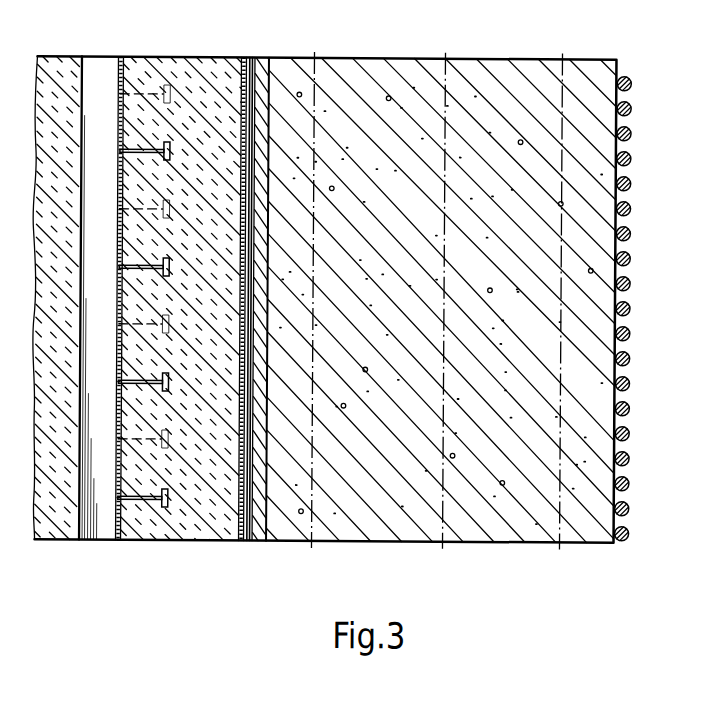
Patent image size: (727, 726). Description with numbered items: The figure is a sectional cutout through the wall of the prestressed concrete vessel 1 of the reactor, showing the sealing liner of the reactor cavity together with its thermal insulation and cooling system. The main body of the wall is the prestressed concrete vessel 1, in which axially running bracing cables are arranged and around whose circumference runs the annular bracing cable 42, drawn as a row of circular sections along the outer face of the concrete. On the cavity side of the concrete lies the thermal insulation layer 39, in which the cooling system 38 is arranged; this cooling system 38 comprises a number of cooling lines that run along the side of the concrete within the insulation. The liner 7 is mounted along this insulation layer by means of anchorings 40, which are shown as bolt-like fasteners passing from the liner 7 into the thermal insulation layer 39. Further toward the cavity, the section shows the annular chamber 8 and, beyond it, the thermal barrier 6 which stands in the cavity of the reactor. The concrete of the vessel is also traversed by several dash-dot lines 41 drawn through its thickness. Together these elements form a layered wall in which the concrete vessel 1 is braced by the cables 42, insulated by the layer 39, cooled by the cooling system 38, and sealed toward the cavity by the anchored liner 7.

The prestressed concrete vessel 1 is at (363, 80).
The thermal barrier 6 is at (63, 70).
The liner 7 is at (119, 542).
The annular chamber 8 is at (101, 513).
The cooling system 38 is at (261, 64).
The thermal insulation layer 39 is at (194, 527).
The anchorings 40 is at (143, 146).
The joints / parting lines 41 is at (312, 528).
The annular bracing cable 42 is at (630, 452).